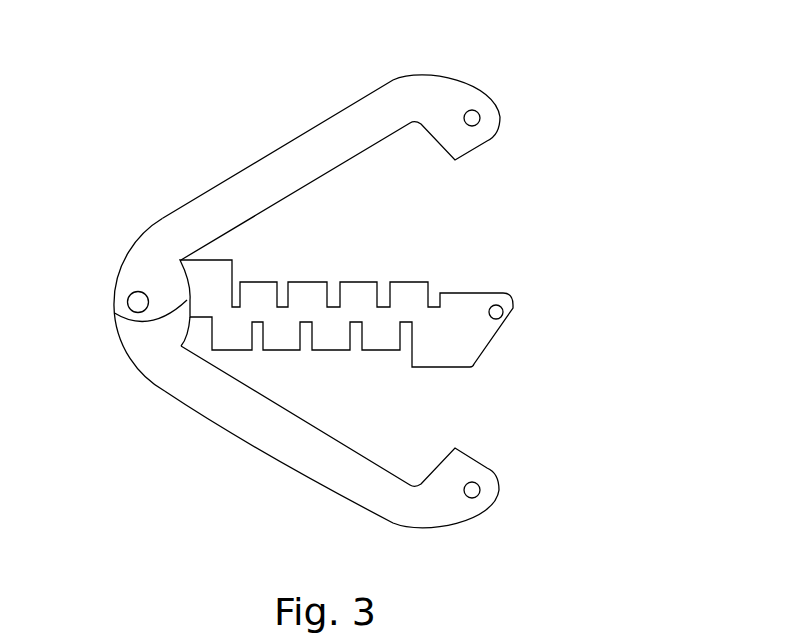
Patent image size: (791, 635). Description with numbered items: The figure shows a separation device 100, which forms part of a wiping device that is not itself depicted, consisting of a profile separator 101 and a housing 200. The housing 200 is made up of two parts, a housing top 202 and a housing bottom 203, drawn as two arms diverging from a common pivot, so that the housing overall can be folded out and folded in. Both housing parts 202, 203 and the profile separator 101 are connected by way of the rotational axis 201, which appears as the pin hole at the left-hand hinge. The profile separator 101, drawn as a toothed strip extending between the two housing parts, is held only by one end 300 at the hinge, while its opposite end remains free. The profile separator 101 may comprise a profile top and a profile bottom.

The separation device 100 is at (577, 166).
The profile separator 101 is at (493, 340).
The housing 200 is at (445, 92).
The rotational axis 201 is at (128, 305).
The housing top 202 is at (232, 192).
The housing bottom 203 is at (240, 428).
The end 300 is at (131, 266).